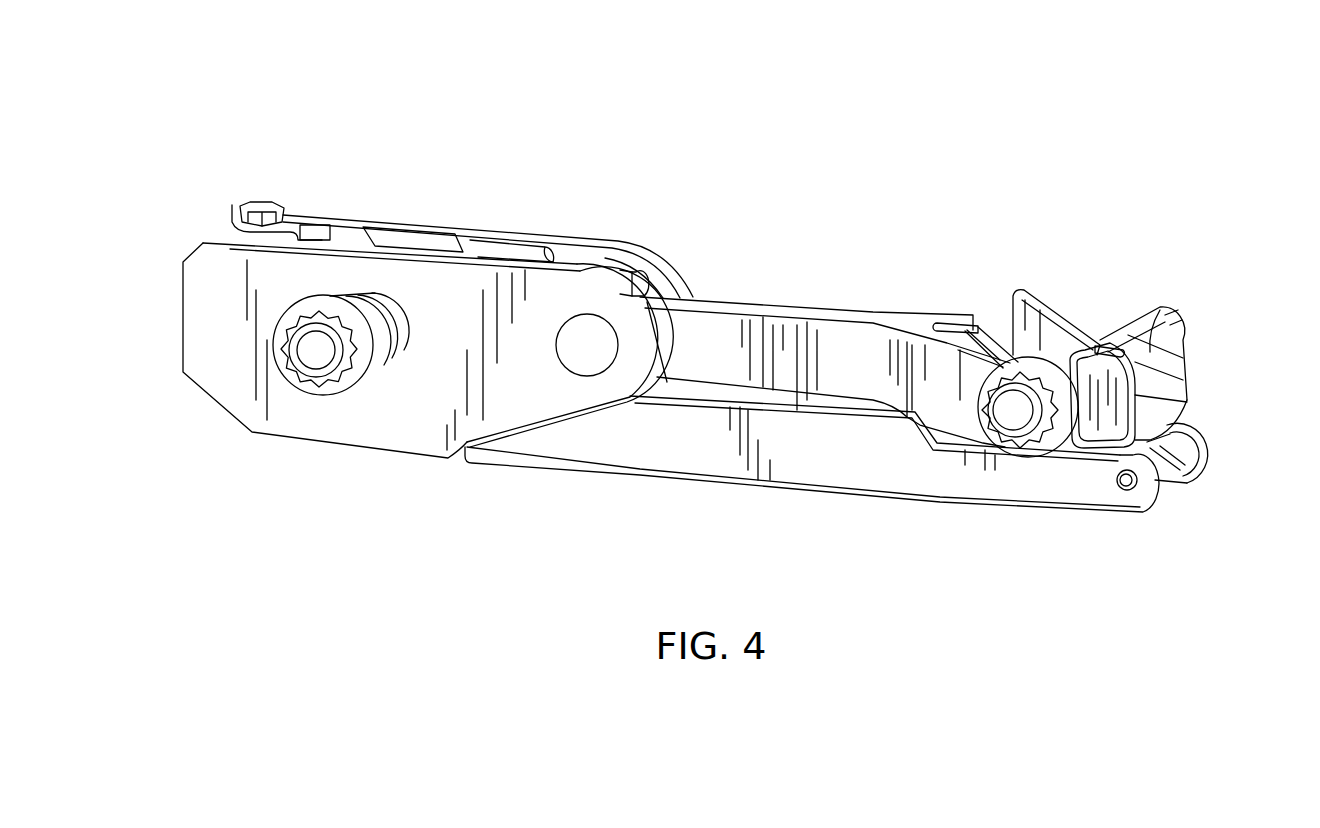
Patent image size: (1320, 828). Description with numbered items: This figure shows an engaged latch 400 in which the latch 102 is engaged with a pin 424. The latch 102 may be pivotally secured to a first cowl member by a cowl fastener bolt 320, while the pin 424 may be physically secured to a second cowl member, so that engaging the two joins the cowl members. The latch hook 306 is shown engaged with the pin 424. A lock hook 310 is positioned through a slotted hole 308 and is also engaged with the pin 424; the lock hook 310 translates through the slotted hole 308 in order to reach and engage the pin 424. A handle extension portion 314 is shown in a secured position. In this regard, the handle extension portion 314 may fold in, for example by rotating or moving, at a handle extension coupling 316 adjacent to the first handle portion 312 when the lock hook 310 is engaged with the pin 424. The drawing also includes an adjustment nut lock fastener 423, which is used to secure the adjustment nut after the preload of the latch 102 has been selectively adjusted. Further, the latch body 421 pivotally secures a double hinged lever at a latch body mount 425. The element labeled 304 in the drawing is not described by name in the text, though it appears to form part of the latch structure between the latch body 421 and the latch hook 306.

The latch 102 is at (150, 128).
The engaged latch 400 is at (1085, 162).
The arm 304 is at (846, 316).
The latch hook 306 is at (1185, 388).
The slotted hole 308 is at (978, 322).
The lock hook 310 is at (1040, 306).
The first handle portion 312 is at (1190, 462).
The handle extension portion 314 is at (692, 466).
The handle extension coupling 316 is at (1128, 490).
The cowl fastener bolt 320 is at (316, 366).
The latch body 421 is at (196, 298).
The adjustment nut lock fastener 423 is at (263, 205).
The pin 424 is at (1182, 328).
The latch body mount 425 is at (596, 362).